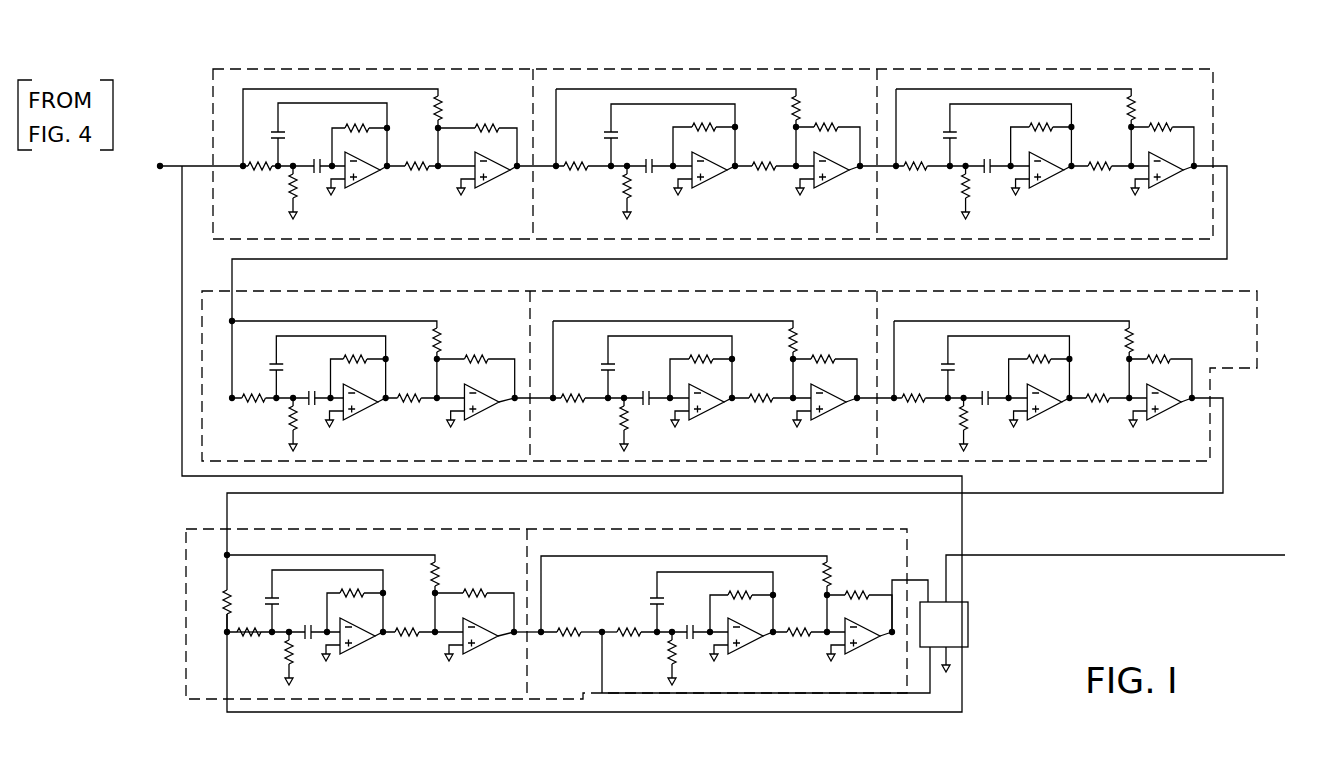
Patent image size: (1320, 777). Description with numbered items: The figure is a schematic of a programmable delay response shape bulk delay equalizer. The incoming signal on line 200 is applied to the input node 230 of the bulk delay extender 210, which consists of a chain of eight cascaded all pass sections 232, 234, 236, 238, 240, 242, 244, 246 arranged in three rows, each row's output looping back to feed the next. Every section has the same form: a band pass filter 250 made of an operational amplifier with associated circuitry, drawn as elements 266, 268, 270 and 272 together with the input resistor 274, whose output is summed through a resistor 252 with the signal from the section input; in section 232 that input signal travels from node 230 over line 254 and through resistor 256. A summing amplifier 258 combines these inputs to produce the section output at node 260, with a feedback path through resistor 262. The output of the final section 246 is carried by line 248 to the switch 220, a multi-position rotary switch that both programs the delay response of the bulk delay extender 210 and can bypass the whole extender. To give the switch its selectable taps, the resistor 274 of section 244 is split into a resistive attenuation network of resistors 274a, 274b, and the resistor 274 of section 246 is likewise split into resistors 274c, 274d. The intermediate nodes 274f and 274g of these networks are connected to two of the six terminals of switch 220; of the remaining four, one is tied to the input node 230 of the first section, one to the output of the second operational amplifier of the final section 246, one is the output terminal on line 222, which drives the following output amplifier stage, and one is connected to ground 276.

The line 200 is at (176, 159).
The bulk delay extender 210 is at (167, 374).
The switch 220 is at (969, 620).
The line 222 is at (1133, 553).
The input node 230 is at (181, 171).
The all pass section 232 is at (396, 135).
The all pass section 234 is at (727, 222).
The all pass section 236 is at (1074, 222).
The all pass section 238 is at (409, 451).
The all pass section 240 is at (741, 451).
The all pass section 242 is at (1082, 453).
The all pass section 244 is at (327, 620).
The all pass section 246 is at (713, 624).
The line 248 is at (920, 580).
The band pass filter 250 is at (357, 164).
The resistor 252 is at (431, 151).
The line 254 is at (340, 104).
The resistor 256 is at (460, 121).
The summing amplifier 258 is at (483, 164).
The node 260 is at (519, 189).
The resistor 262 is at (477, 134).
The feedback capacitor 266 is at (329, 134).
The feedback resistor 268 is at (377, 129).
The shunt resistor 270 is at (269, 192).
The coupling capacitor 272 is at (311, 190).
The resistor 274 is at (257, 137).
The resistor 274a is at (226, 598).
The resistor 274b is at (255, 636).
The resistor 274c is at (567, 652).
The resistor 274d is at (626, 652).
The intermediate node 274f is at (227, 631).
The intermediate node 274g is at (588, 600).
The ground 276 is at (950, 663).